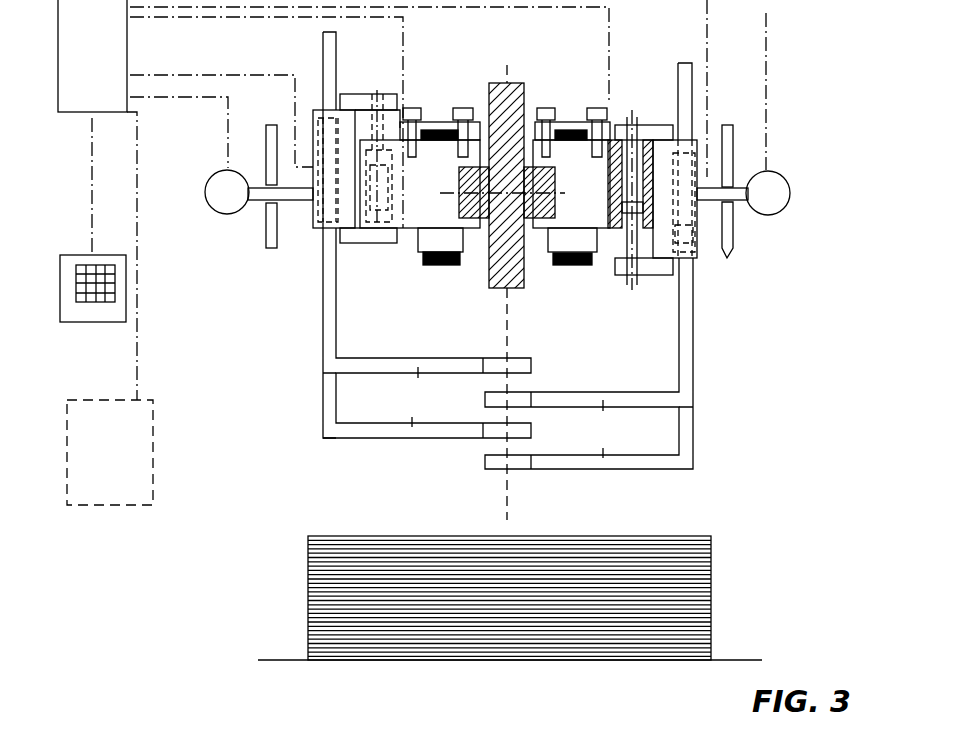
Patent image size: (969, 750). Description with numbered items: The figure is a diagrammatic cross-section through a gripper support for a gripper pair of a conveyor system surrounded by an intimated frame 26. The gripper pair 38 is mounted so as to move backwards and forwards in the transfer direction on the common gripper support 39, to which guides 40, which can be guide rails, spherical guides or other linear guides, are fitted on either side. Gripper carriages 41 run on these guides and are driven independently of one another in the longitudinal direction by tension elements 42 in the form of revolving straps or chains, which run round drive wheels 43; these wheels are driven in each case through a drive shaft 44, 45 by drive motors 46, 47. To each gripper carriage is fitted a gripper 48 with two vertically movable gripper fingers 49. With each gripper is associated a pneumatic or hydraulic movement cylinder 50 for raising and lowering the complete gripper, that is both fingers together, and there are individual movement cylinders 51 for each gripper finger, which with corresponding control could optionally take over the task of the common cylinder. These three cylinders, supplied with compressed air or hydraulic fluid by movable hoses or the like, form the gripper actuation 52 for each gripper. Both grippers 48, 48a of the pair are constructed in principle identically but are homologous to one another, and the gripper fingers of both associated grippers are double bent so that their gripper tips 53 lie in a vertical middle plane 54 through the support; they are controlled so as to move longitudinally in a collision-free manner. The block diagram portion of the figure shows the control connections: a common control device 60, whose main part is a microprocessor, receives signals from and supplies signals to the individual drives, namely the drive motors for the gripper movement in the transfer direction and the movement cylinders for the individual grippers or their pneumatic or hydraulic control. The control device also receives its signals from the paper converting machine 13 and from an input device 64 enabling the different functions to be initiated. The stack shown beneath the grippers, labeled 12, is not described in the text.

The stack of sheets 12 is at (698, 573).
The paper converting machine 13 is at (148, 441).
The frame 26 is at (264, 233).
The gripper pair 38 is at (723, 312).
The gripper support 39 is at (523, 287).
The guides 40 is at (555, 190).
The gripper carriages 41 is at (566, 150).
The tension elements 42 is at (586, 265).
The drive wheels 43 is at (425, 241).
The drive shaft 44 is at (708, 200).
The drive shaft 45 is at (292, 205).
The drive motor 46 is at (779, 208).
The drive motor 47 is at (222, 213).
The gripper 48 is at (707, 425).
The gripper 48a is at (300, 420).
The gripper fingers 49 is at (516, 412).
The movement cylinder 50 is at (638, 168).
The movement cylinders 51 is at (693, 162).
The gripper actuation 52 is at (698, 92).
The gripper tips 53 is at (490, 460).
The vertical middle plane 54 is at (510, 493).
The control device 60 is at (127, 46).
The input device 64 is at (126, 310).